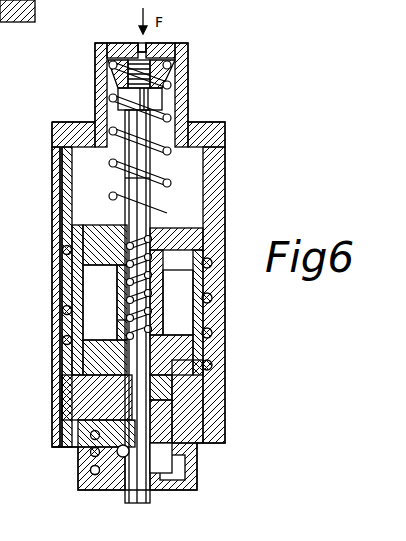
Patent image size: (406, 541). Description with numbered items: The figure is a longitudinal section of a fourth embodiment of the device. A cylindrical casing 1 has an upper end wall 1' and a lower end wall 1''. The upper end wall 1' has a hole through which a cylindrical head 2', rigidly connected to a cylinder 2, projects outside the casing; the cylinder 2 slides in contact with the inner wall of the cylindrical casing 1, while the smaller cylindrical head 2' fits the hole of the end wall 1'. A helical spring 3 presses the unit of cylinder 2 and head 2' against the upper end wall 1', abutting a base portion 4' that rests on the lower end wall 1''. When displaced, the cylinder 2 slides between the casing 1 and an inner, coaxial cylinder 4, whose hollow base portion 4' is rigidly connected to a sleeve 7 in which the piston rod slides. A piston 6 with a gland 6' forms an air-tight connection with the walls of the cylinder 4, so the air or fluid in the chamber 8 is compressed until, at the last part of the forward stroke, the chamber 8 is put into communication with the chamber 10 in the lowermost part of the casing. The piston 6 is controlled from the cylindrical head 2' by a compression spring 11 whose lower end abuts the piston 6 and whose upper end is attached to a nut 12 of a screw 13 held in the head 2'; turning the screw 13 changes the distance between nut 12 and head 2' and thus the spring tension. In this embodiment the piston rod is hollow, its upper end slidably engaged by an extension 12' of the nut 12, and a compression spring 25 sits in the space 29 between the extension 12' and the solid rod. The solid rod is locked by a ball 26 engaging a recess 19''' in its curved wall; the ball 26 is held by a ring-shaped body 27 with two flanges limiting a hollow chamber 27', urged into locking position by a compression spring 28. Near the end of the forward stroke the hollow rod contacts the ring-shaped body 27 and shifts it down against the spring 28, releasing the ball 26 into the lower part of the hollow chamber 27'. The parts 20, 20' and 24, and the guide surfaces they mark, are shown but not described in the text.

The cylindrical casing 1 is at (47, 297).
The upper end wall 1' is at (134, 120).
The lower end wall 1'' is at (56, 460).
The cylinder 2 is at (213, 295).
The cylindrical head 2' is at (122, 95).
The helical spring 3 is at (215, 300).
The cylinder 4 is at (74, 300).
The base portion 4' is at (76, 389).
The piston 6 is at (176, 221).
The gland 6' is at (223, 299).
The sleeve 7 is at (172, 360).
The chamber 8 is at (85, 326).
The chamber 10 is at (165, 410).
The compression spring 11 is at (110, 160).
The nut 12 is at (164, 85).
The extension 12' is at (114, 188).
The screw 13 is at (150, 45).
The recess 19''' is at (182, 481).
The lower bushing 20 is at (77, 468).
The bushing flange 20' is at (74, 427).
The piston rod 24 is at (140, 378).
The compression spring 25 is at (124, 284).
The ball 26 is at (110, 490).
The ring-shaped body 27 is at (199, 466).
The hollow chamber 27' is at (206, 421).
The compression spring 28 is at (100, 487).
The space 29 is at (125, 320).